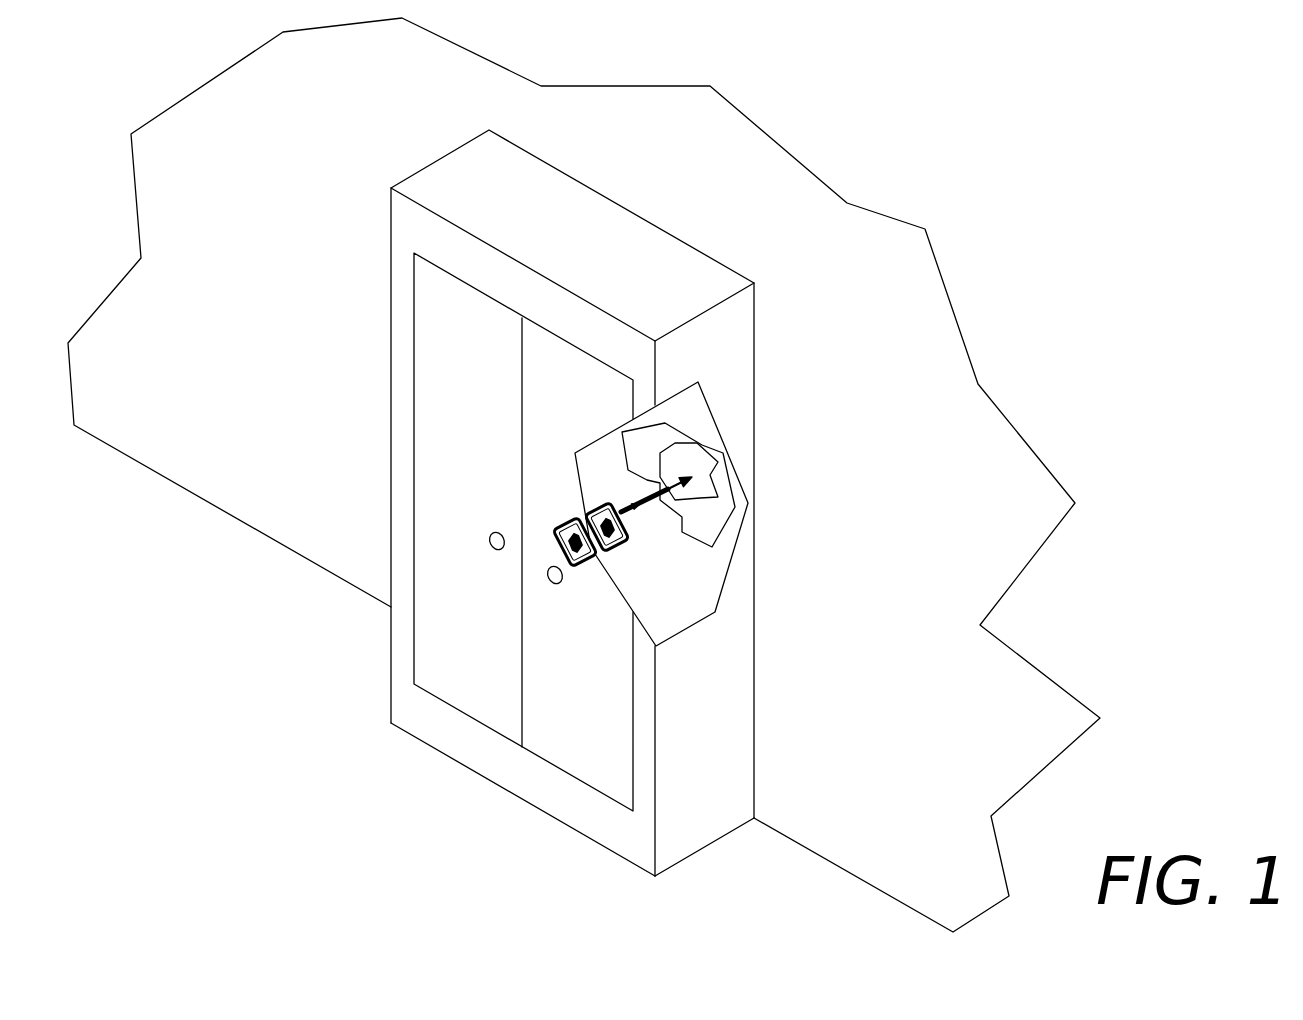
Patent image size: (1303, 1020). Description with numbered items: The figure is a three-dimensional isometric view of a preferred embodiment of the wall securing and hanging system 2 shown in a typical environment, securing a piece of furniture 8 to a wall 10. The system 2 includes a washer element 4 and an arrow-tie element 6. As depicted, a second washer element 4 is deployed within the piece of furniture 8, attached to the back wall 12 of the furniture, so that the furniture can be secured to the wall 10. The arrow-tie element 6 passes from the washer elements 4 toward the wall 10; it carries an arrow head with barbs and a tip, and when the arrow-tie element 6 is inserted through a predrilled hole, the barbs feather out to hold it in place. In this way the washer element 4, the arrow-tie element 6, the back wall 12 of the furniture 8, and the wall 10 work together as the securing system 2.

The wall securing and hanging system 2 is at (1036, 328).
The washer element 4 is at (574, 493).
The arrow-tie element 6 is at (648, 474).
The piece of furniture 8 is at (433, 188).
The wall 10 is at (891, 484).
The back wall 12 is at (729, 581).